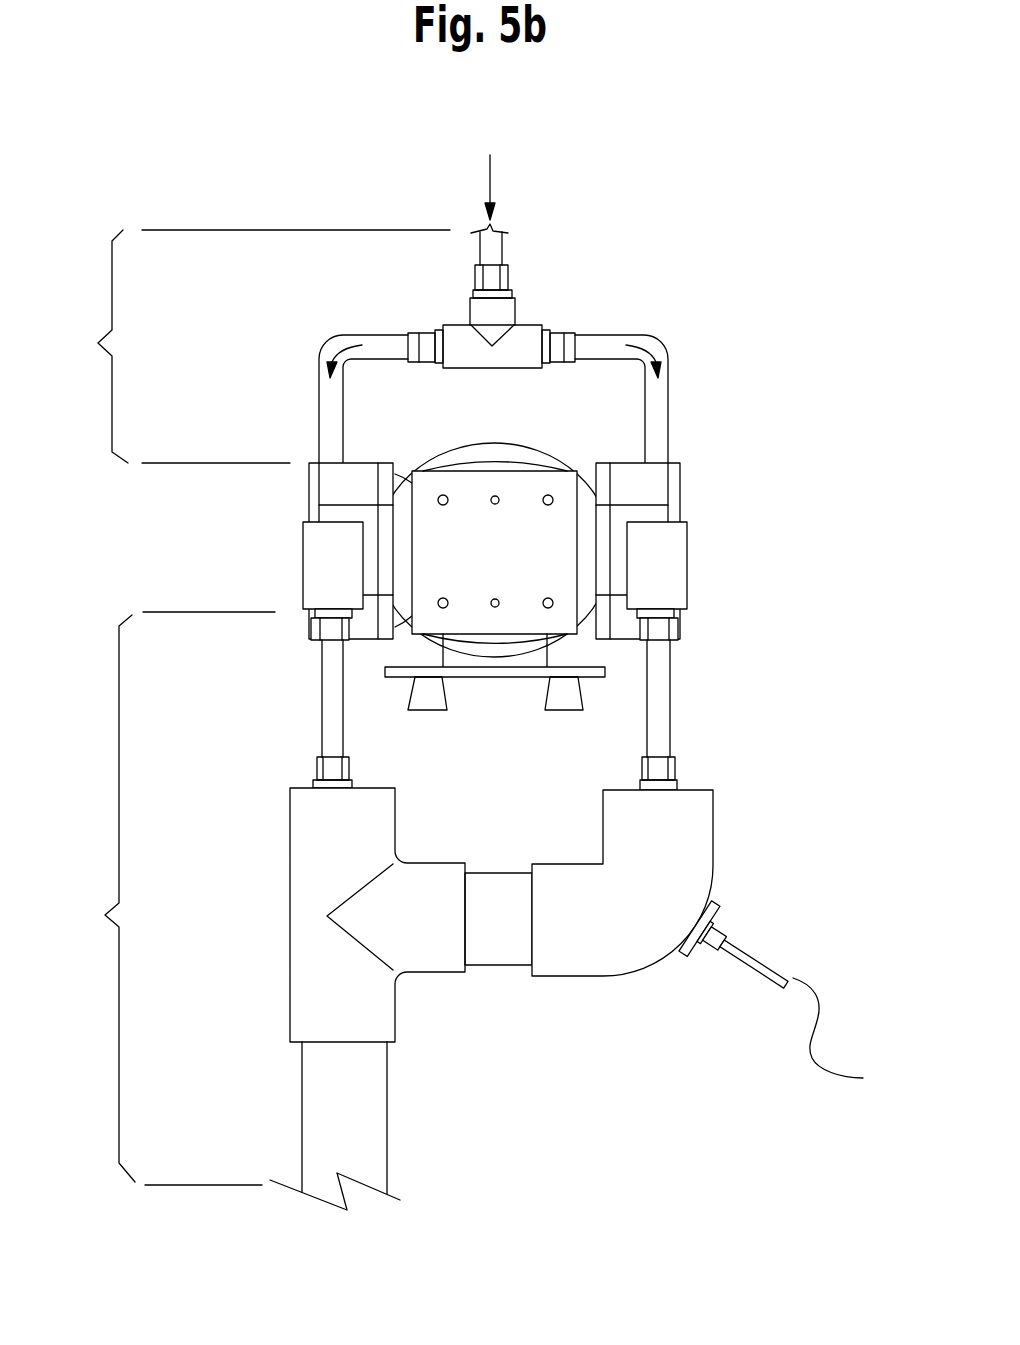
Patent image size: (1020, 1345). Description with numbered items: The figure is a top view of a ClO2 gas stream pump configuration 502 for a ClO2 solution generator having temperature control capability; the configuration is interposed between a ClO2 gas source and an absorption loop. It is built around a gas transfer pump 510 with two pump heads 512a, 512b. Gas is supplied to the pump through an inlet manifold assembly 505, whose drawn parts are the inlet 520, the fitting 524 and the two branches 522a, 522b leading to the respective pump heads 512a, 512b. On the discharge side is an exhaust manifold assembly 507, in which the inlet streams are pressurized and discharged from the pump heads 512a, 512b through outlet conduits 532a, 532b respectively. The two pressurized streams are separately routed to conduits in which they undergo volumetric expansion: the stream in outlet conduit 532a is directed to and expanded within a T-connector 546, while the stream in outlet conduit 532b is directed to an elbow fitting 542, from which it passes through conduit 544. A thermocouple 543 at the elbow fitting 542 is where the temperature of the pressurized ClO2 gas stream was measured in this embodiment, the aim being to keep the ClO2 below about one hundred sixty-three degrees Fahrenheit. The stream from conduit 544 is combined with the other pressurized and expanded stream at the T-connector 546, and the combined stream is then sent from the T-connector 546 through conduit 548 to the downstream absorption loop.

The ClO2 gas stream pump configuration 502 is at (718, 212).
The inlet manifold assembly 505 is at (249, 346).
The exhaust manifold assembly 507 is at (163, 898).
The gas transfer pump 510 is at (563, 480).
The pump head 512a is at (327, 477).
The pump head 512b is at (662, 476).
The inlet line 520 is at (502, 242).
The inlet branch tube 522a is at (338, 333).
The inlet branch tube 522b is at (647, 335).
The inlet tee fitting 524 is at (468, 318).
The outlet conduit 532a is at (327, 696).
The outlet conduit 532b is at (668, 717).
The elbow fitting 542 is at (603, 970).
The thermocouple 543 is at (713, 953).
The conduit 544 is at (492, 960).
The T-connector 546 is at (300, 877).
The conduit 548 is at (320, 1137).